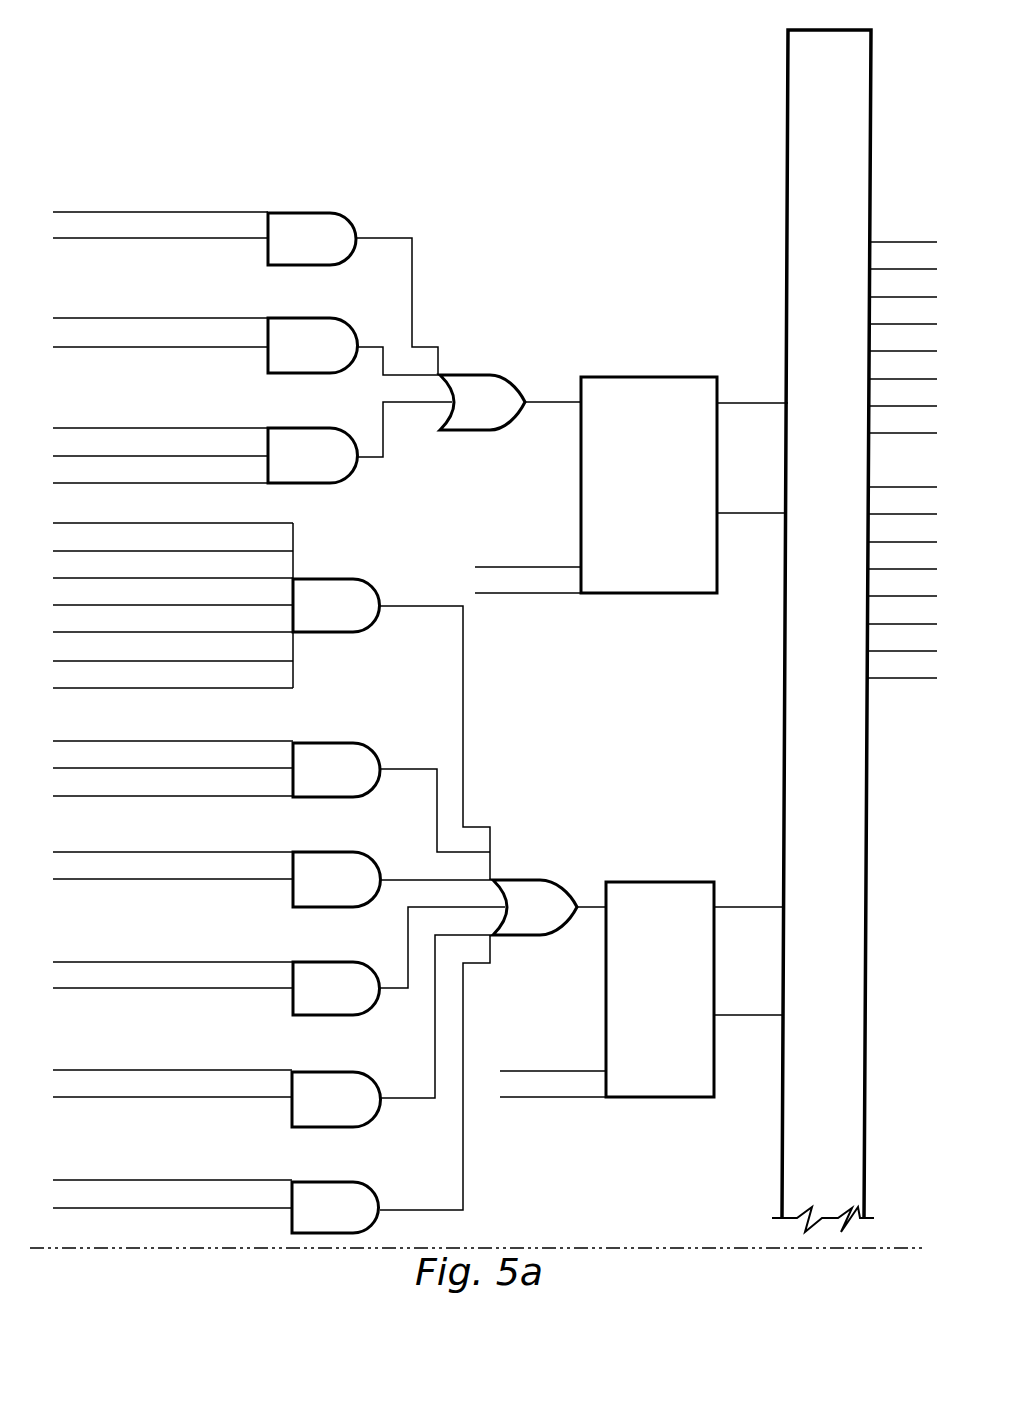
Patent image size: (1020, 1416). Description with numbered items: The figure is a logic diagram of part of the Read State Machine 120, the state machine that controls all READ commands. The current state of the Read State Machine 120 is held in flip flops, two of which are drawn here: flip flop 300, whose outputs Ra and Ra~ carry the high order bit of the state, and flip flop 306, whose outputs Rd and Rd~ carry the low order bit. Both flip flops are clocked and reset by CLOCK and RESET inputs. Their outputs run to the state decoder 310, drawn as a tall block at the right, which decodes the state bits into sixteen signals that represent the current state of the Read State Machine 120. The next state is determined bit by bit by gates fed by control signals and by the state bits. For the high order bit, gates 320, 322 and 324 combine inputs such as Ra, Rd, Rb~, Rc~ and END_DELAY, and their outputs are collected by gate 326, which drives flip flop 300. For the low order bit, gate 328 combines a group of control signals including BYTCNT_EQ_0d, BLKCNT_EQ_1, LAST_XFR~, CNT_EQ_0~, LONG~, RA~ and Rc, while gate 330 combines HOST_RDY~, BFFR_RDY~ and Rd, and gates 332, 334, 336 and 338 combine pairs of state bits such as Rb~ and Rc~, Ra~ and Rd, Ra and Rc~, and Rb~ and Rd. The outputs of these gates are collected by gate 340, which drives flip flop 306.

The Read State Machine 120 is at (231, 96).
The flip flop 300 is at (614, 377).
The flip flop 306 is at (632, 882).
The state decoder 310 is at (787, 195).
The gate 320 is at (298, 213).
The gate 322 is at (289, 318).
The gate 324 is at (288, 428).
The gate 326 is at (457, 375).
The gate 328 is at (335, 579).
The gate 330 is at (322, 741).
The gate 332 is at (300, 852).
The gate 334 is at (300, 962).
The gate 336 is at (300, 1072).
The gate 338 is at (300, 1182).
The gate 340 is at (503, 880).